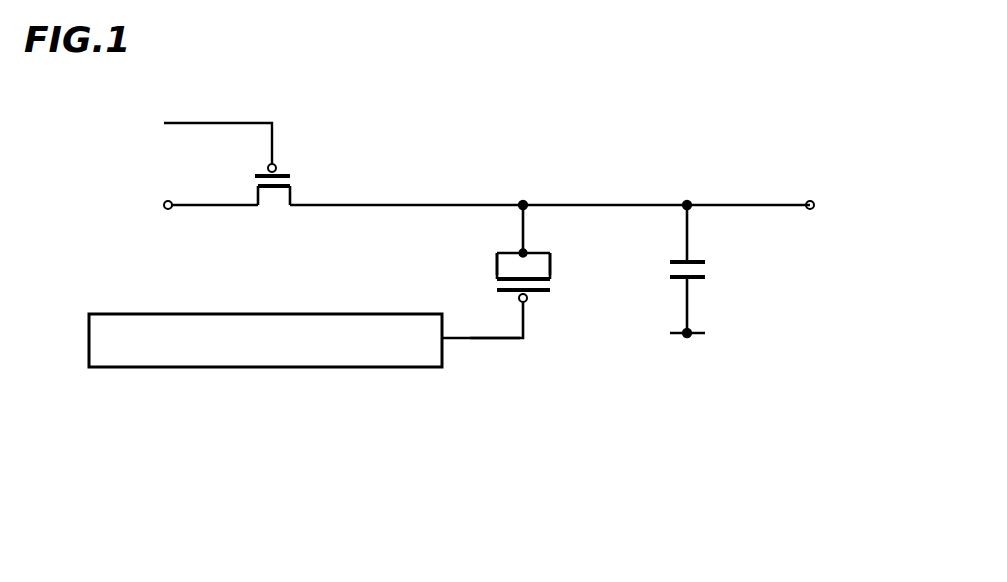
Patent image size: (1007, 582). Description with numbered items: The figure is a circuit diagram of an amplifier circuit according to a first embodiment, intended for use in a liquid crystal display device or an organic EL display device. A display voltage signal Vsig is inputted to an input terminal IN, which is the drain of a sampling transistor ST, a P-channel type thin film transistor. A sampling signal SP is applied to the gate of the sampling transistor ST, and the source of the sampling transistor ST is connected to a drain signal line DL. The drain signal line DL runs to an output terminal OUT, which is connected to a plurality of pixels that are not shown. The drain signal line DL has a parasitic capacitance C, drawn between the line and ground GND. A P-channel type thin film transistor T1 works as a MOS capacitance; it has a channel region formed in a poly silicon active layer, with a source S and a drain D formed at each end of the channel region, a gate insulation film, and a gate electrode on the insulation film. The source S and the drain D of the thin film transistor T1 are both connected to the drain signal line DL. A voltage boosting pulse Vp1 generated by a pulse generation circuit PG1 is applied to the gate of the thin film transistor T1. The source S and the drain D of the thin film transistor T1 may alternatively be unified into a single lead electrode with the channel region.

The drain signal line DL is at (610, 205).
The input terminal IN is at (150, 208).
The display voltage signal Vsig is at (71, 208).
The sampling signal SP is at (198, 139).
The sampling transistor ST is at (288, 170).
The thin film transistor T1 is at (556, 292).
The source S is at (495, 255).
The drain D is at (558, 255).
The voltage boosting pulse Vp1 is at (495, 357).
The pulse generation circuit PG1 is at (268, 368).
The parasitic capacitance C is at (700, 267).
The ground GND is at (695, 349).
The output terminal OUT is at (837, 208).